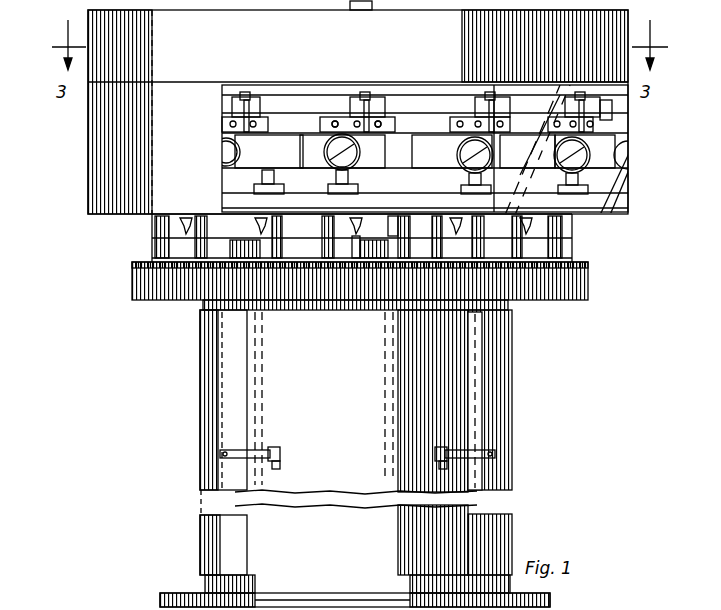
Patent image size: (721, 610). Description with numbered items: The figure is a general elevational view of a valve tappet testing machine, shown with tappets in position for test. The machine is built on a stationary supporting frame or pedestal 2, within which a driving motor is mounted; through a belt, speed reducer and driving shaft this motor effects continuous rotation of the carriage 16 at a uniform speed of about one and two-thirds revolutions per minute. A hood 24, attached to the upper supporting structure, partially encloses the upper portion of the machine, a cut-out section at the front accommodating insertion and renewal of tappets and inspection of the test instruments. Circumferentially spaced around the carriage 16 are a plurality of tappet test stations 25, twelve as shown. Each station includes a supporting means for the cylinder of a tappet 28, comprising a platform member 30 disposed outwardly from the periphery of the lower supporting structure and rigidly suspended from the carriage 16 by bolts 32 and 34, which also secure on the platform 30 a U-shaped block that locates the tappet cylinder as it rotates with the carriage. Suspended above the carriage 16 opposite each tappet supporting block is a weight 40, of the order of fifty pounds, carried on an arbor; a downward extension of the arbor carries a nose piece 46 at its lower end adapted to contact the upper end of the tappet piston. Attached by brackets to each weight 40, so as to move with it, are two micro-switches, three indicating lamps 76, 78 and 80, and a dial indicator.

The stationary supporting frame or pedestal 2 is at (262, 390).
The carriage 16 is at (412, 198).
The hood 24 is at (88, 176).
The tappet test stations 25 is at (418, 165).
The tappet 28 is at (356, 240).
The platform member 30 is at (152, 264).
The bolt 32 is at (314, 238).
The bolt 34 is at (390, 222).
The weight 40 is at (290, 148).
The nose piece 46 is at (266, 226).
The indicating lamp 76 is at (333, 121).
The indicating lamp 78 is at (357, 121).
The indicating lamp 80 is at (380, 121).